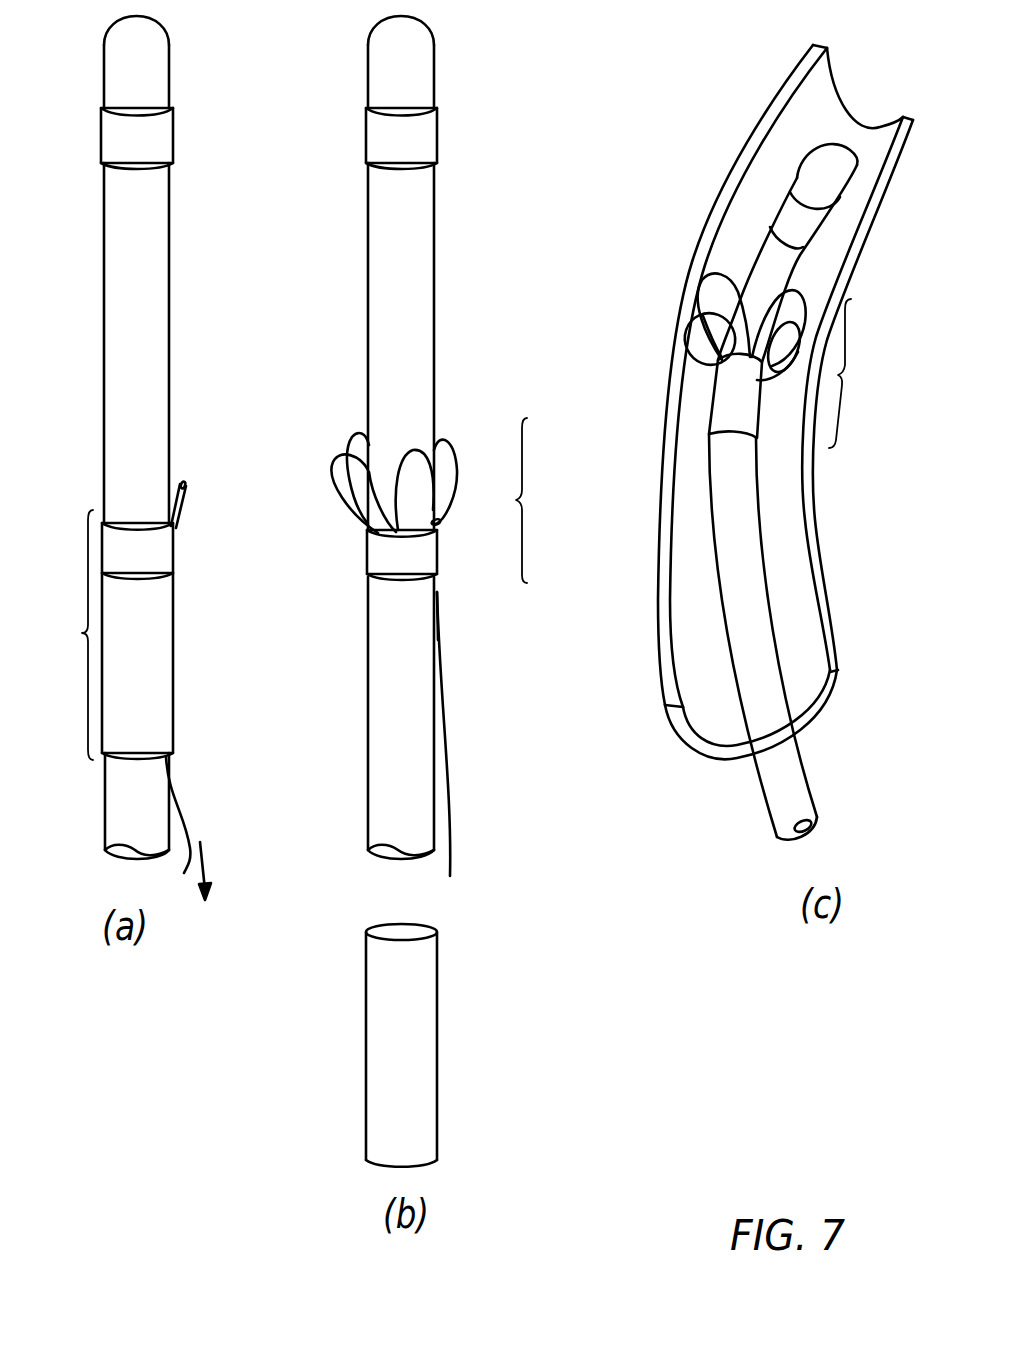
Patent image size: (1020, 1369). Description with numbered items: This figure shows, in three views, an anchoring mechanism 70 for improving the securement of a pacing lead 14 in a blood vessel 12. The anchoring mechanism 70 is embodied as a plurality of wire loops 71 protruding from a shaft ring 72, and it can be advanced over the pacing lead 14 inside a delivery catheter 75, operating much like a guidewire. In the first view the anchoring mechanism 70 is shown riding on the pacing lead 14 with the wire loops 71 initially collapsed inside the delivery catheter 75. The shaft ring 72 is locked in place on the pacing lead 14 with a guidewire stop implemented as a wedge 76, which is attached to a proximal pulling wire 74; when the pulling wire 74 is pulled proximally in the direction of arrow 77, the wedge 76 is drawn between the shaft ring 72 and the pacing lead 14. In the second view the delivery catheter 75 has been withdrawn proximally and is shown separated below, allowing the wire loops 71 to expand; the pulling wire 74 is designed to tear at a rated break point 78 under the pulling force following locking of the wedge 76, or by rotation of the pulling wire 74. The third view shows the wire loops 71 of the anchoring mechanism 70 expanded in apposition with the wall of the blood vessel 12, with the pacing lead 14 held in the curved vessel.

The blood vessel 12 is at (821, 550).
The pacing lead 14 is at (103, 306).
The anchoring mechanism 70 is at (464, 529).
The wire loops 71 is at (437, 441).
The shaft ring 72 is at (174, 547).
The pulling wire 74 is at (185, 820).
The delivery catheter 75 is at (165, 632).
The wedge 76 is at (187, 490).
The arrow 77 is at (207, 858).
The rated break point 78 is at (440, 588).